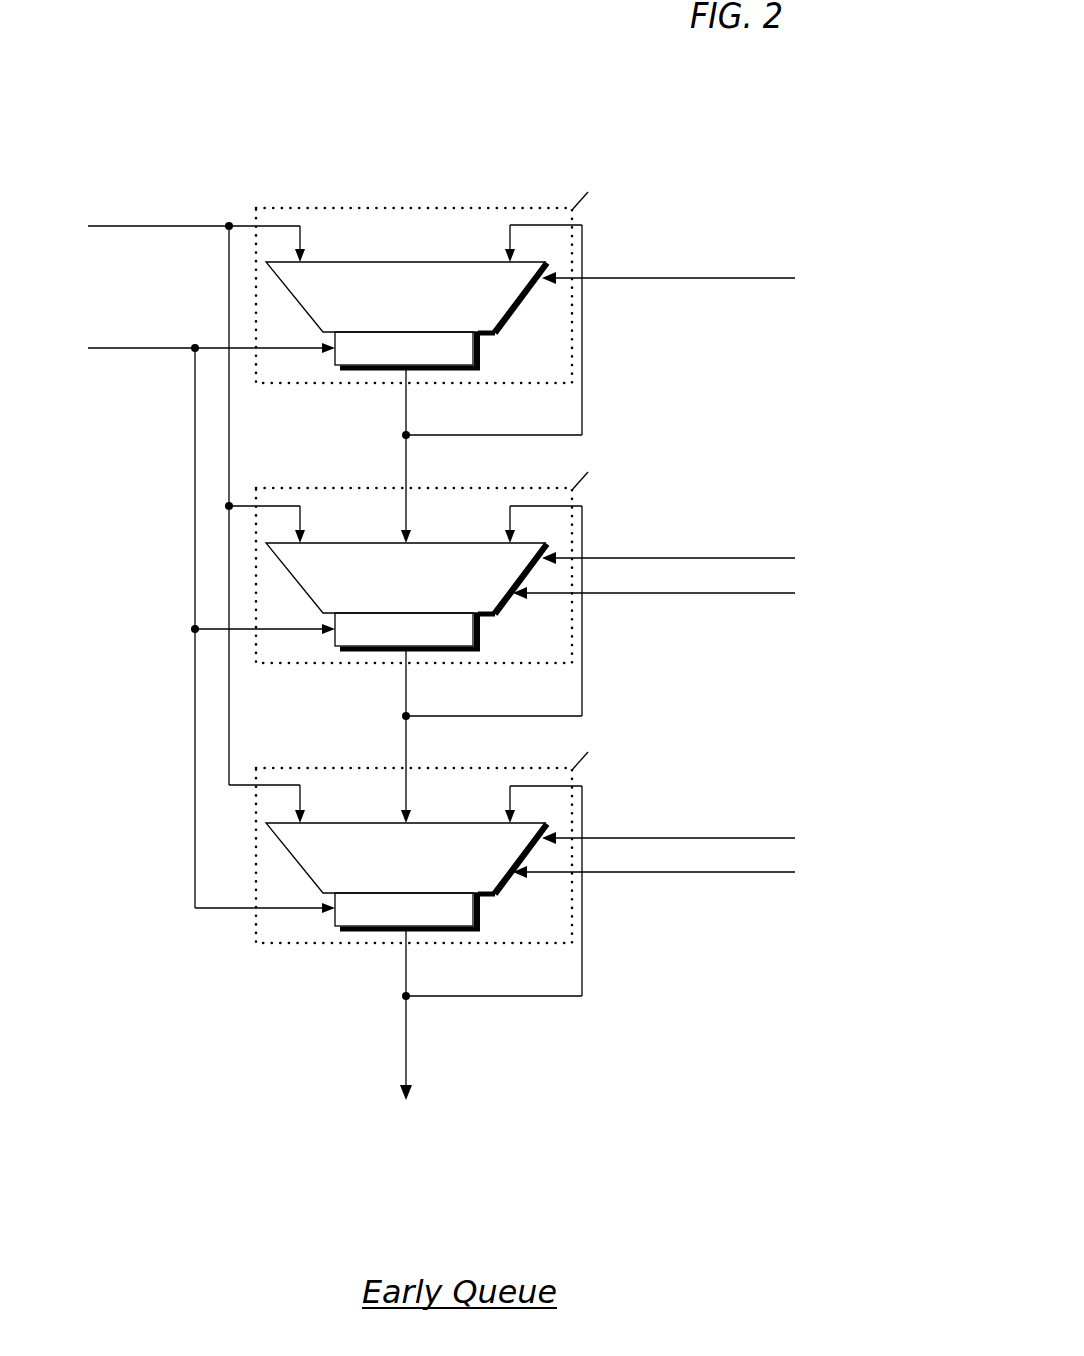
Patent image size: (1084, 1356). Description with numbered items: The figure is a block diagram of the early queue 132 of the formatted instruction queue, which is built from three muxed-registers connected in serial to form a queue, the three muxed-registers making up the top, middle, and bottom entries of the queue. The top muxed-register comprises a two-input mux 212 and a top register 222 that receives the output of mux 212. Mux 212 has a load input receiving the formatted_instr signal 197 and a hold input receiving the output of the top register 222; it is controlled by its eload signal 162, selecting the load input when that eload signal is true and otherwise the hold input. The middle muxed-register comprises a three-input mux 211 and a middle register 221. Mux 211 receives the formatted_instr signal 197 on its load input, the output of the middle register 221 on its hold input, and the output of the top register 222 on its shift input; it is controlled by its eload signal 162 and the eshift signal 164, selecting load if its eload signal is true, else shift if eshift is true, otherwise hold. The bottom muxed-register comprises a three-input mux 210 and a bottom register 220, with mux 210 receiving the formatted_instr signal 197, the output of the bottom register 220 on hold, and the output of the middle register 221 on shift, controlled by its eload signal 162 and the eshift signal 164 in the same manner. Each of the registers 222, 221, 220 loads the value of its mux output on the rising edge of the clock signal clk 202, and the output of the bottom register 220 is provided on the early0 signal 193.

The early queue 132 is at (87, 1219).
The formatted_instr signal 197 is at (110, 225).
The clk 202 is at (110, 347).
The eload signal 162 is at (598, 277).
The eshift signal 164 is at (598, 592).
The two-input mux 212 is at (420, 317).
The three-input mux 211 is at (420, 598).
The three-input mux 210 is at (420, 878).
The register ER2 222 is at (447, 360).
The register ER1 221 is at (447, 641).
The register ER0 220 is at (447, 921).
The early0 signal 193 is at (408, 1033).